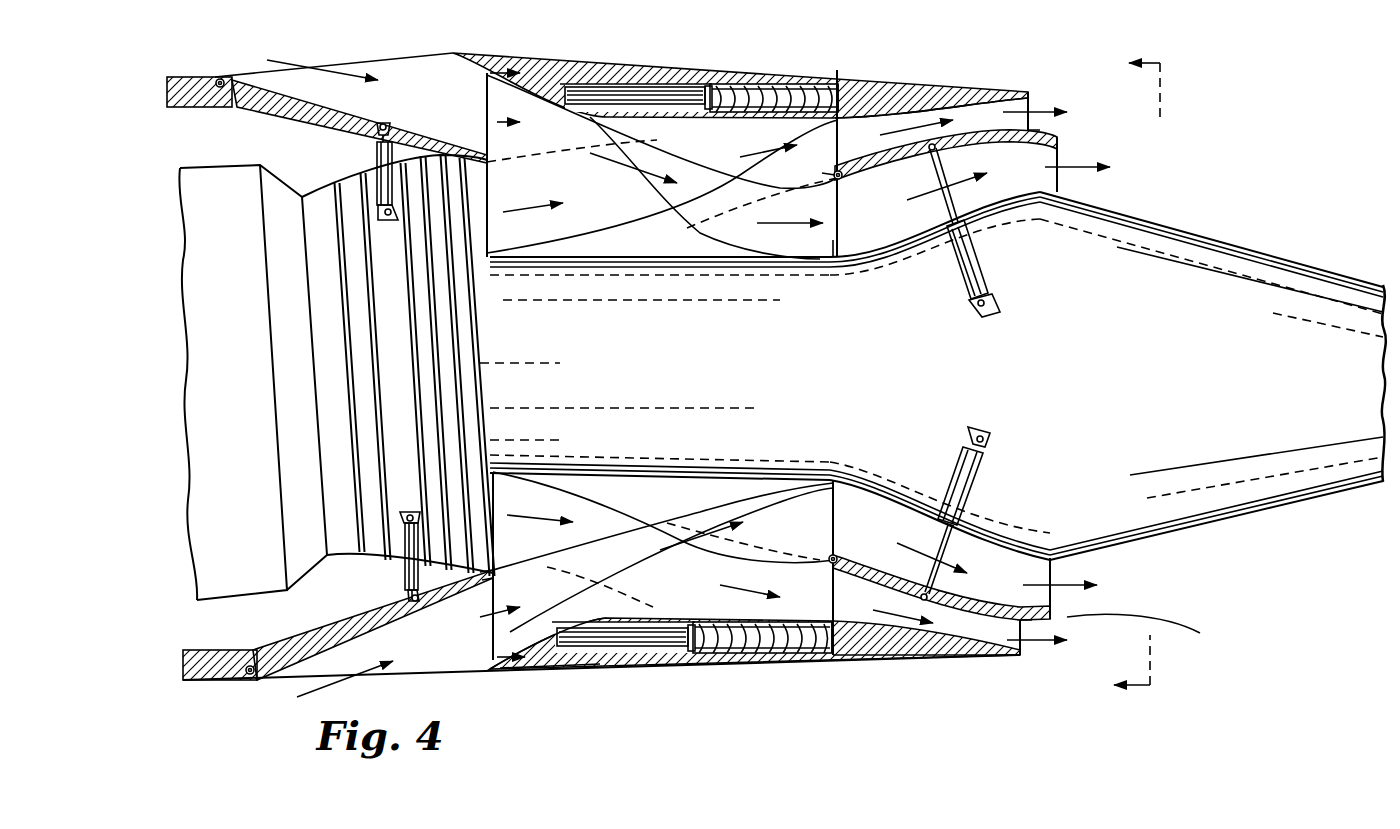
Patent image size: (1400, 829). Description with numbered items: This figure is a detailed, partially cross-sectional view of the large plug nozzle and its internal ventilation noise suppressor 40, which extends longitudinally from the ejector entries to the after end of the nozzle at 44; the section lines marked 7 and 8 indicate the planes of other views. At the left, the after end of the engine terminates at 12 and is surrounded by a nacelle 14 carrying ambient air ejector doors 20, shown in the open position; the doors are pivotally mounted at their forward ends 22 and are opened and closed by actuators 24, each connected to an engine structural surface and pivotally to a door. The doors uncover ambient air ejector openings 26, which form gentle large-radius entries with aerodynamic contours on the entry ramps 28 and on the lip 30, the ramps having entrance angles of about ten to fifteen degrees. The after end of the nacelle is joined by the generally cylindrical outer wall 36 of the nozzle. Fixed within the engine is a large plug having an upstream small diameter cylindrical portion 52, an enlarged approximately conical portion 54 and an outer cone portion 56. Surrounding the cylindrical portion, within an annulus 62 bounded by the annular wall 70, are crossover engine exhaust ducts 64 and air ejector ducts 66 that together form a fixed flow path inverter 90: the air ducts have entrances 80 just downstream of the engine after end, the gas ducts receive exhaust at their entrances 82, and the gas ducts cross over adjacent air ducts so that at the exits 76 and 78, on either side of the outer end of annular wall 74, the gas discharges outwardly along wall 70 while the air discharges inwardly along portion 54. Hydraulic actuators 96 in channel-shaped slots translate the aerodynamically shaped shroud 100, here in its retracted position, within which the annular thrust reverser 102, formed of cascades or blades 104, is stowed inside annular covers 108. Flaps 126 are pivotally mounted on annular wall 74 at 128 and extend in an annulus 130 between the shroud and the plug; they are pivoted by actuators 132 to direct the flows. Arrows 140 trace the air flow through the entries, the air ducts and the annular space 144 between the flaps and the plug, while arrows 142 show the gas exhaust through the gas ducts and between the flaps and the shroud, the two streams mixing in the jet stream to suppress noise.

The section line 7- 7 is at (1122, 375).
The section line 8- 8 is at (490, 372).
The engine after end 12 is at (480, 331).
The nacelle 14 is at (217, 682).
The ambient air ejector doors 20 is at (264, 75).
The forward ends of ejector doors 22 is at (221, 79).
The actuators 24 is at (377, 163).
The ambient air ejector openings 26 is at (427, 53).
The entry ramps 28 is at (500, 574).
The lip 30 is at (533, 630).
The outer wall 36 is at (547, 667).
The internal ventilation noise suppressor 40 is at (1074, 137).
The after end of the nozzle 44 is at (1063, 183).
The small diameter cylindrical portion 52 is at (570, 356).
The enlarged approximately conical portion 54 is at (910, 376).
The outer cone portion 56 is at (1235, 389).
The annulus 62 is at (698, 246).
The crossover engine exhaust ducts 64 is at (597, 227).
The air ejector ducts 66 is at (530, 144).
The annular wall 70 is at (655, 620).
The annular wall 74 is at (822, 173).
The exits of the engine gas exhaust ducts 76 is at (917, 697).
The exits of the air ejector ducts 78 is at (833, 245).
The air duct entrances 80 is at (474, 616).
The gas exhaust duct entrances 82 is at (490, 238).
The fixed flow path inverter 90 is at (688, 229).
The hydraulic actuators 96 is at (593, 641).
The shroud 100 is at (887, 97).
The annular thrust reverser 102 is at (790, 642).
The cascades or blades 104 is at (765, 98).
The annular covers 108 is at (720, 85).
The flaps 126 is at (884, 181).
The flap pivot 128 is at (840, 173).
The annulus 130 is at (1152, 631).
The actuators 132 is at (984, 259).
The air flow arrows 140 is at (360, 690).
The gas exhaust flow arrows 142 is at (520, 517).
The annular space 144 is at (1030, 567).